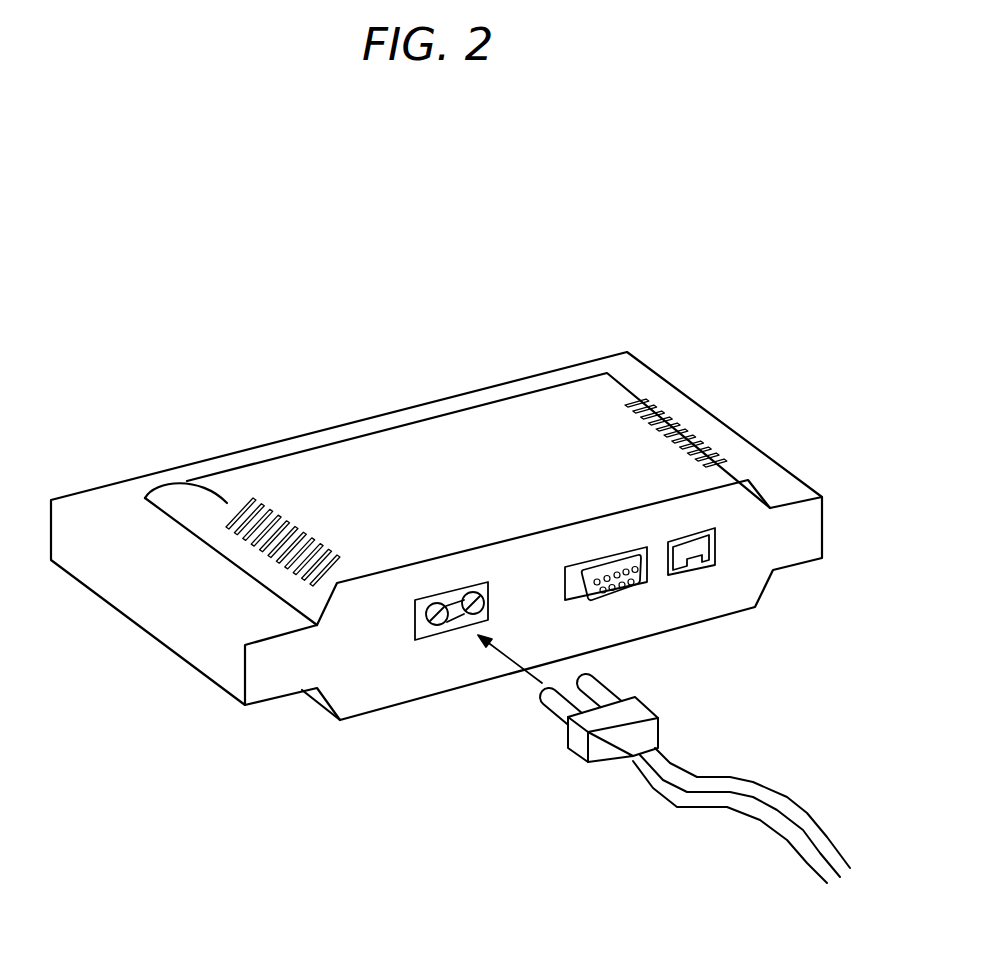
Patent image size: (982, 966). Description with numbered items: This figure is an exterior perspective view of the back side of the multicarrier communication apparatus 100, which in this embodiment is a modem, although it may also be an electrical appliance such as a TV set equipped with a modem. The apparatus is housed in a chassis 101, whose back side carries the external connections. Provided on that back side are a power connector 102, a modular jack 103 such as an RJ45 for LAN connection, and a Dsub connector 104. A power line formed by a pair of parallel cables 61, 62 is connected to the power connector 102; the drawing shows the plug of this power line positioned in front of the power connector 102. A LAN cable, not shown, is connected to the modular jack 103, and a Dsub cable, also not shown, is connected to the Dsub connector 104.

The multicarrier communication apparatus 100 is at (368, 294).
The chassis 101 is at (227, 455).
The power connector 102 is at (447, 637).
The modular jack 103 is at (697, 565).
The Dsub connector 104 is at (618, 595).
The parallel cable 61 is at (780, 802).
The parallel cable 62 is at (707, 917).